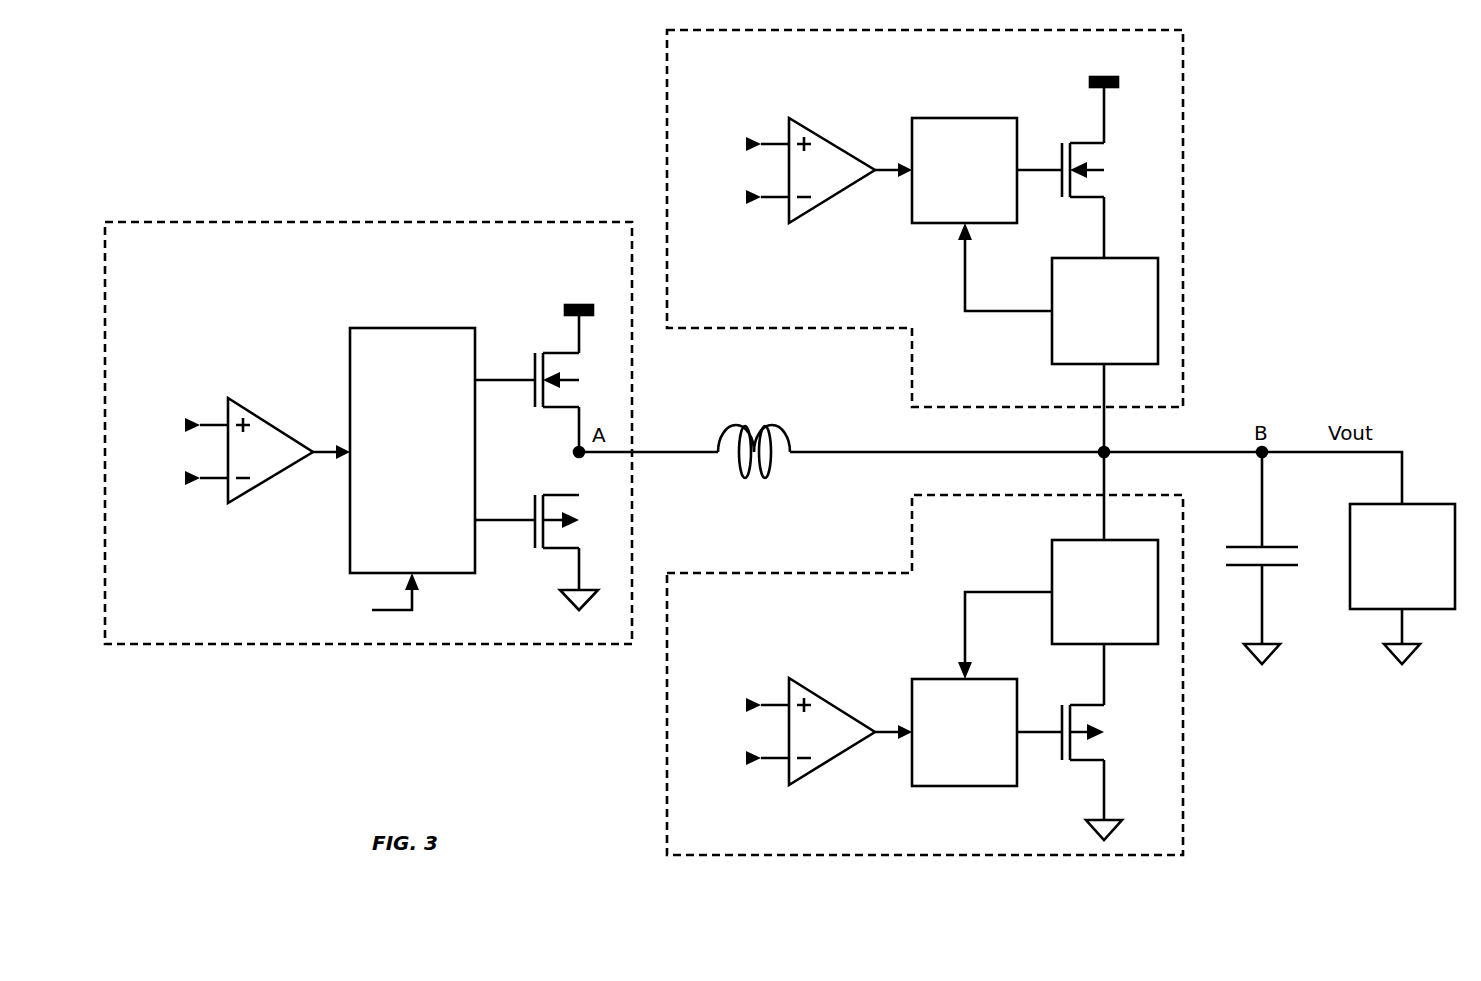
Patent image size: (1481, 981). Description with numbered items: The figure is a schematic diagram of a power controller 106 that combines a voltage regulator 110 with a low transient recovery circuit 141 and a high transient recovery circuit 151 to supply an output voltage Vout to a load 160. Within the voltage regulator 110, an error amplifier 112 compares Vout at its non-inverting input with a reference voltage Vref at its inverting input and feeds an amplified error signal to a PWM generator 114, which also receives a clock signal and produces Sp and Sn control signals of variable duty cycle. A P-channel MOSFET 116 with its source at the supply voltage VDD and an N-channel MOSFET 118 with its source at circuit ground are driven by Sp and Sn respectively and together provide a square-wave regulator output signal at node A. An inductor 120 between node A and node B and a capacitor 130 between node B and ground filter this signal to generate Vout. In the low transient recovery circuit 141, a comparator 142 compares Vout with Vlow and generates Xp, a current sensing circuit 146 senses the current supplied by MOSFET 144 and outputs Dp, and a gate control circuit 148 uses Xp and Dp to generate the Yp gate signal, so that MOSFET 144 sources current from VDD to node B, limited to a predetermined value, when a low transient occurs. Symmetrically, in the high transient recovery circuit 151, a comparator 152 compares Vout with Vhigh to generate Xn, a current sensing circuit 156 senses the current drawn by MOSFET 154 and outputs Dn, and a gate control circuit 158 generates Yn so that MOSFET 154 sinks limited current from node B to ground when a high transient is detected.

The power controller 106 is at (241, 114).
The voltage regulator 110 is at (360, 222).
The error amplifier 112 is at (265, 422).
The pulse width modulator (PWM) generator 114 is at (412, 328).
The P-channel MOSFET 116 is at (550, 341).
The N-channel MOSFET 118 is at (550, 482).
The inductor 120 is at (762, 426).
The capacitor 130 is at (1282, 547).
The low transient recovery circuit 141 is at (783, 328).
The comparator 142 is at (830, 140).
The MOSFET 144 is at (1080, 131).
The current sensing circuit 146 is at (1128, 258).
The gate control circuit 148 is at (962, 118).
The high transient recovery circuit 151 is at (783, 573).
The comparator 152 is at (830, 702).
The MOSFET 154 is at (1080, 693).
The current sensing circuit 156 is at (1128, 540).
The gate control circuit 158 is at (988, 679).
The load 160 is at (1424, 504).